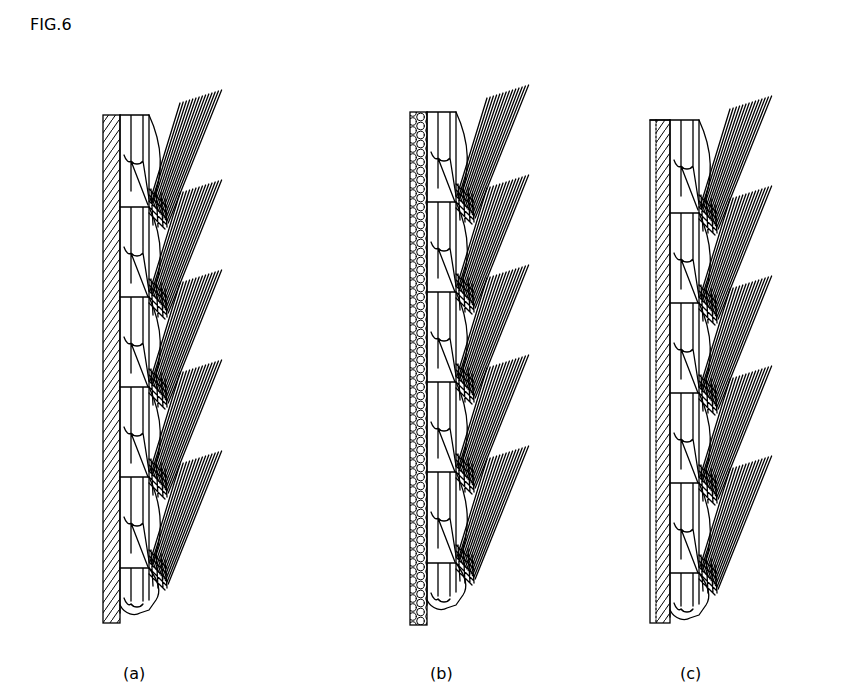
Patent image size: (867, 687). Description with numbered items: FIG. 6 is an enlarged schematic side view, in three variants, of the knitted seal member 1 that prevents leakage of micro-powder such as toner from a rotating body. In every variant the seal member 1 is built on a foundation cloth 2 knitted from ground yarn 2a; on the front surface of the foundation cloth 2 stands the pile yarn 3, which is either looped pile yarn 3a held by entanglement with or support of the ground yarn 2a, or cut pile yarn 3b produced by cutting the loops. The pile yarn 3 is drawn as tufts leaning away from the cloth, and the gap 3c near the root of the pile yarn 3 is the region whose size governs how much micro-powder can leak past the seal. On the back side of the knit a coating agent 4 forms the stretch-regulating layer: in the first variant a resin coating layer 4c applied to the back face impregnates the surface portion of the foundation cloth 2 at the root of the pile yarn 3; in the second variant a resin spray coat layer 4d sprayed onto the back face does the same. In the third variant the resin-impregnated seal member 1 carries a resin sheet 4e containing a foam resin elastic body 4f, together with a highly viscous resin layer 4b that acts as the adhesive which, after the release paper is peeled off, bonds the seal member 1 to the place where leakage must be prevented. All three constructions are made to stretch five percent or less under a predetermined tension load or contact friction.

The seal member 1 is at (432, 353).
The foundation cloth 2 is at (377, 365).
The ground yarn 2a is at (121, 318).
The pile yarn 3 is at (488, 337).
The looped pile yarn 3a is at (479, 337).
The cut pile yarn 3b is at (479, 337).
The gap 3c is at (168, 220).
The coating agent 4 is at (425, 351).
The highly viscous resin layer 4b is at (665, 108).
The resin coating layer 4c is at (155, 200).
The resin spray coat layer 4d is at (410, 505).
The resin sheet 4e is at (653, 187).
The foam resin elastic body 4f is at (636, 371).